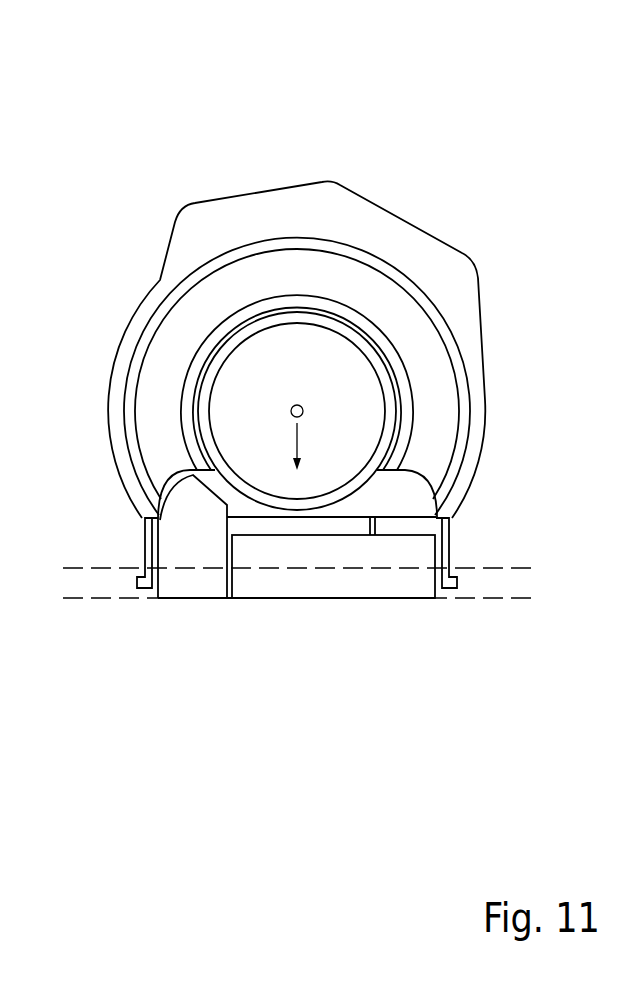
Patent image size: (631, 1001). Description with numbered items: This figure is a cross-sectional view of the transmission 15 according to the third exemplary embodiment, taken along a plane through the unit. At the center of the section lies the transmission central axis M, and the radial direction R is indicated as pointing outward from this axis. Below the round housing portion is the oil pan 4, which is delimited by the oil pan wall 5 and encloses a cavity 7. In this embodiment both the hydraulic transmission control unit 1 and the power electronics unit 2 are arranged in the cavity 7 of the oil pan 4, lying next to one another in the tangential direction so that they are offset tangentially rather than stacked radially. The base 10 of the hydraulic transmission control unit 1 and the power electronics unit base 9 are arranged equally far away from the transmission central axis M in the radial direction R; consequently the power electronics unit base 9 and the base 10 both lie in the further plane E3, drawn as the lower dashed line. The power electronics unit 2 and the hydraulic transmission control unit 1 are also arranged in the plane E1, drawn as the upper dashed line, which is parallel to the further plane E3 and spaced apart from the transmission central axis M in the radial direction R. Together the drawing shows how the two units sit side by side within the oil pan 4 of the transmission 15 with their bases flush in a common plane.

The transmission 15 is at (173, 179).
The transmission central axis M is at (292, 406).
The radial direction R is at (279, 445).
The cavity 7 is at (402, 485).
The oil pan 4 is at (428, 477).
The oil pan wall 5 is at (443, 550).
The power electronics unit 2 is at (195, 550).
The power electronics unit base 9 is at (203, 600).
The hydraulic transmission control unit 1 is at (310, 580).
The base of the hydraulic transmission control unit 10 is at (417, 598).
The plane E1 is at (92, 570).
The further plane E3 is at (512, 598).